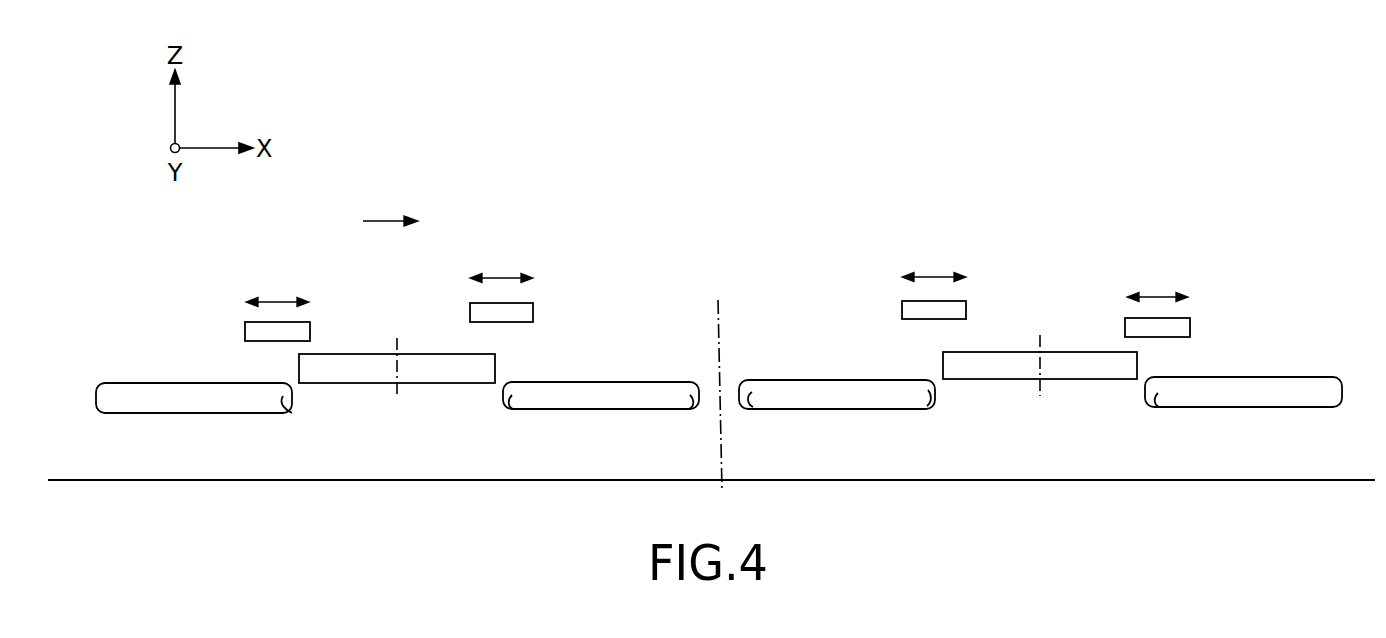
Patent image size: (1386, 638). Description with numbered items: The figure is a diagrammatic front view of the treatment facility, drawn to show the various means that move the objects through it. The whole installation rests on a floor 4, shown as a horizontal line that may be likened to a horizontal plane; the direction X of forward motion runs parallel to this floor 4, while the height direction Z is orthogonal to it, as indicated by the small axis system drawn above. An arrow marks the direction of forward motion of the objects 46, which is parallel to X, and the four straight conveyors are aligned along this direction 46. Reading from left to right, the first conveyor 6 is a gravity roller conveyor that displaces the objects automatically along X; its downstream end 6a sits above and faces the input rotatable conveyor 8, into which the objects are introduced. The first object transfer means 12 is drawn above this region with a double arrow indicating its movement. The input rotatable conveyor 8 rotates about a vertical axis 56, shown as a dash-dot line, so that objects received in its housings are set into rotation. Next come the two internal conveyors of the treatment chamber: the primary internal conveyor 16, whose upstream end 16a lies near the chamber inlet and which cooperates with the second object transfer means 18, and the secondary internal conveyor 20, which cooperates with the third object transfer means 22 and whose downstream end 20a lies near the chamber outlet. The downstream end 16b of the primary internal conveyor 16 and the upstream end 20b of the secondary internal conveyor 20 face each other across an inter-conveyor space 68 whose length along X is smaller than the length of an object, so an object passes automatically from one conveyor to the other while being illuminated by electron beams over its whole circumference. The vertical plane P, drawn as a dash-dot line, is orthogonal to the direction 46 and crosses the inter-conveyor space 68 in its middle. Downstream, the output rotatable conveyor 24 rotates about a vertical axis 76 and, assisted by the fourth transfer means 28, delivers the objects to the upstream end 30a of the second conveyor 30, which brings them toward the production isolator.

The floor 4 is at (147, 481).
The first conveyor 6 is at (203, 403).
The downstream end of the first conveyor 6a is at (281, 396).
The input rotatable conveyor 8 is at (437, 372).
The first object transfer means 12 is at (301, 333).
The primary internal conveyor 16 is at (600, 398).
The upstream end of the primary internal conveyor 16a is at (507, 398).
The downstream end of the primary internal conveyor 16b is at (693, 398).
The second object transfer means 18 is at (524, 314).
The secondary internal conveyor 20 is at (843, 400).
The downstream end of the secondary internal conveyor 20a is at (930, 391).
The upstream end of the secondary internal conveyor 20b is at (758, 393).
The third object transfer means 22 is at (957, 311).
The output rotatable conveyor 24 is at (1082, 368).
The fourth transfer means 28 is at (1182, 329).
The second conveyor 30 is at (1237, 398).
The upstream end of the second conveyor 30a is at (1158, 395).
The direction of forward motion of the objects 46 is at (390, 208).
The axis of rotation of the input rotatable conveyor 56 is at (397, 343).
The inter-conveyor space 68 is at (707, 389).
The axis of rotation of the output rotatable conveyor 76 is at (1040, 340).
The plane P is at (718, 318).